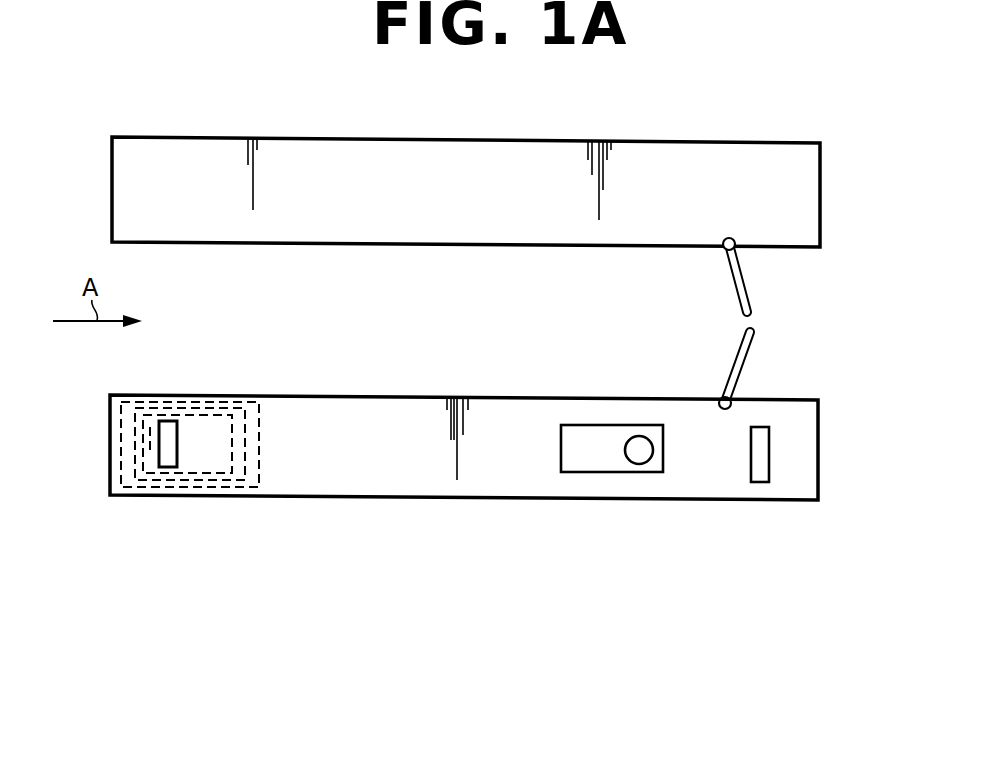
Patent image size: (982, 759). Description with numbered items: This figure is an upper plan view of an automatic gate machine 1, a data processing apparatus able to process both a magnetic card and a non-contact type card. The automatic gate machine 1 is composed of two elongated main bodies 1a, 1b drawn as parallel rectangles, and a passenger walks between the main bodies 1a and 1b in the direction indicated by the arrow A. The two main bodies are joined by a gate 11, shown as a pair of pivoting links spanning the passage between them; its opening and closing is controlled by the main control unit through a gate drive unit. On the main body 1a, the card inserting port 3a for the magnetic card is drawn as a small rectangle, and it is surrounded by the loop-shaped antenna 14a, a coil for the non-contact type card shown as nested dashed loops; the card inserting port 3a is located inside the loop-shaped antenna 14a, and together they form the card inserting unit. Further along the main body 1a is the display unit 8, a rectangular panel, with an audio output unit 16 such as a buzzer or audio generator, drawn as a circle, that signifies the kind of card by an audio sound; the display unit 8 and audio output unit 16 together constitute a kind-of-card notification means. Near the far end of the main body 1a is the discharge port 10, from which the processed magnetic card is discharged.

The automatic gate machine 1 is at (822, 161).
The main body 1a is at (110, 452).
The main body 1b is at (110, 170).
The card inserting port 3a is at (168, 458).
The display unit 8 is at (593, 462).
The discharge port 10 is at (758, 475).
The gate 11 is at (752, 310).
The loop-shaped antenna 14a is at (249, 488).
The audio output unit 16 is at (639, 458).